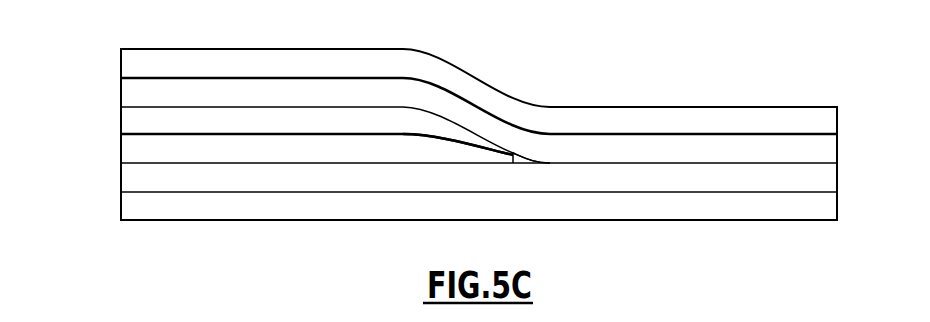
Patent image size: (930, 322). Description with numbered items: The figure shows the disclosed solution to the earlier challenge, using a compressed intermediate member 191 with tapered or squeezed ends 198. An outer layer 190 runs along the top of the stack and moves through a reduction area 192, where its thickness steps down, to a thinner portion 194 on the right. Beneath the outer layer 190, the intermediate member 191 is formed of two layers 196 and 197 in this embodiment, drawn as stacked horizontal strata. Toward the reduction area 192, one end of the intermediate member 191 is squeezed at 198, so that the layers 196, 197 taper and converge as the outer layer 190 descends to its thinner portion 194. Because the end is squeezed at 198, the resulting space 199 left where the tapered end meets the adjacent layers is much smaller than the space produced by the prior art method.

The outer layer 190 is at (288, 70).
The compressed intermediate member 191 is at (121, 151).
The reduction area 192 is at (473, 90).
The thinner portion 194 is at (625, 118).
The first layer of intermediate member 196 is at (197, 123).
The second layer of intermediate member 197 is at (310, 150).
The squeezed end 198 is at (457, 132).
The resulting space 199 is at (521, 163).